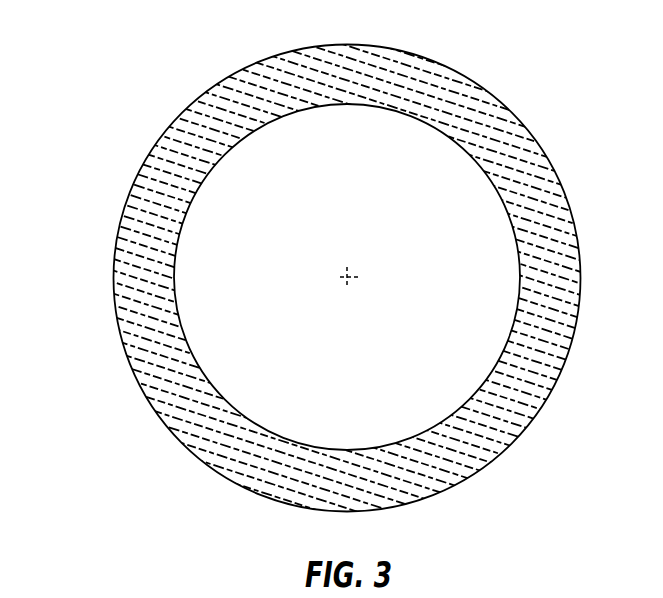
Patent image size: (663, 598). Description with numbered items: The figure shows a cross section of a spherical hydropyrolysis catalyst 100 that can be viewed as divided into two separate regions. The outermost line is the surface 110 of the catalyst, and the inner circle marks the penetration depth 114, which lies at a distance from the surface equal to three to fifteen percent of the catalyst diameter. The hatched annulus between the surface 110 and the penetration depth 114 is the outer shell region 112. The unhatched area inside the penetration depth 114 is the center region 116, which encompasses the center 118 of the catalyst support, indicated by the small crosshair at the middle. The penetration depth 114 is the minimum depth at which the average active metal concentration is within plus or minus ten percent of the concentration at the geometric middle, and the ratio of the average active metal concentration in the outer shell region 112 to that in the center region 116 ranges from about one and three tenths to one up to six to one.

The catalyst 100 is at (117, 56).
The surface 110 is at (528, 128).
The outer shell region 112 is at (548, 197).
The penetration depth 114 is at (513, 328).
The center region 116 is at (368, 198).
The center 118 is at (338, 283).